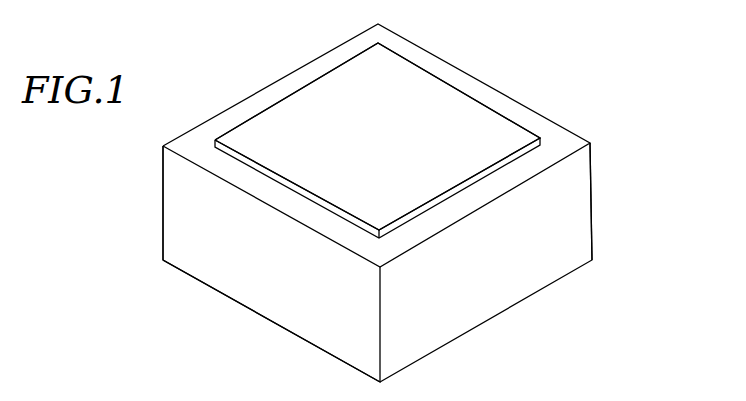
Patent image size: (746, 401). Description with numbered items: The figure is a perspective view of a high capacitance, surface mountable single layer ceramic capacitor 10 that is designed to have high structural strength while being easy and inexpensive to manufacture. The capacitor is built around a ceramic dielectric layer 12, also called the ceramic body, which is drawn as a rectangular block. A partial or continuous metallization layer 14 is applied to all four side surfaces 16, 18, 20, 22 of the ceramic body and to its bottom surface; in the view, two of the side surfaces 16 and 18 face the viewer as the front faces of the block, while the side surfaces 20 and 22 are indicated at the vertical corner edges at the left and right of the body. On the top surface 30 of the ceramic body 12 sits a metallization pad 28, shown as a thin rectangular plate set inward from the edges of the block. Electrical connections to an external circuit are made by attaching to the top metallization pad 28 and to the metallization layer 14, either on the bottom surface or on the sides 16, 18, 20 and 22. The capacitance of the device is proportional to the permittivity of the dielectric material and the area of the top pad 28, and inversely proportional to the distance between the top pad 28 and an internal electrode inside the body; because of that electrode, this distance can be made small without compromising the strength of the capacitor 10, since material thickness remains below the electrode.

The single layer ceramic capacitor 10 is at (582, 70).
The ceramic dielectric layer 12 is at (548, 133).
The metallization layer 14 is at (230, 268).
The side surface 16 is at (480, 278).
The side surface 18 is at (312, 305).
The side surface 20 is at (172, 140).
The side surface 22 is at (592, 142).
The metallization pad 28 is at (418, 100).
The top surface 30 is at (343, 53).